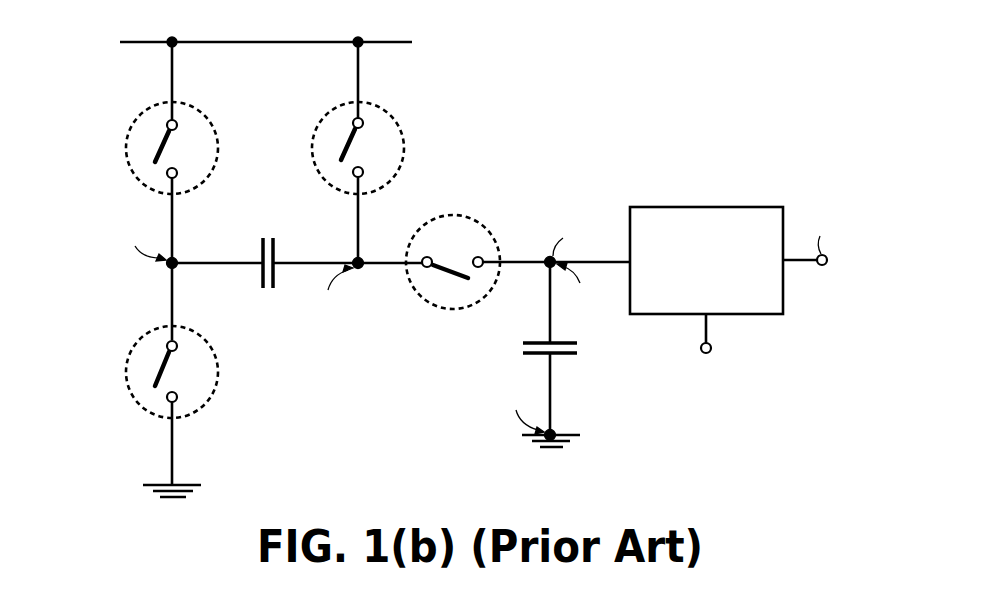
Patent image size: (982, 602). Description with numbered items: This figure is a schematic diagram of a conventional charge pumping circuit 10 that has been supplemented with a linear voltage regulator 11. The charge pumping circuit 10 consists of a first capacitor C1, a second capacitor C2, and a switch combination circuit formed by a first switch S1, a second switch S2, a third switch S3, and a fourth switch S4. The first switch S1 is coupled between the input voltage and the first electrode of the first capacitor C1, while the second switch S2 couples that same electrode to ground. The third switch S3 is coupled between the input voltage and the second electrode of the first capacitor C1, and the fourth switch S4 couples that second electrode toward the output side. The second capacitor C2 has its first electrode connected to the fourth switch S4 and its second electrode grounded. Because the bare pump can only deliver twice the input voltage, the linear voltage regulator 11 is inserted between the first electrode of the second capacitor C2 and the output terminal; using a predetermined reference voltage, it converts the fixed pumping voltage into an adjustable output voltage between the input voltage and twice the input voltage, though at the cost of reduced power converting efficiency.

The charge pumping circuit 10 is at (80, 142).
The linear voltage regulator 11 is at (719, 207).
The first switch S1 is at (133, 120).
The second switch S2 is at (133, 341).
The third switch S3 is at (319, 121).
The fourth switch S4 is at (472, 218).
The first capacitor C1 is at (263, 237).
The second capacitor C2 is at (579, 351).